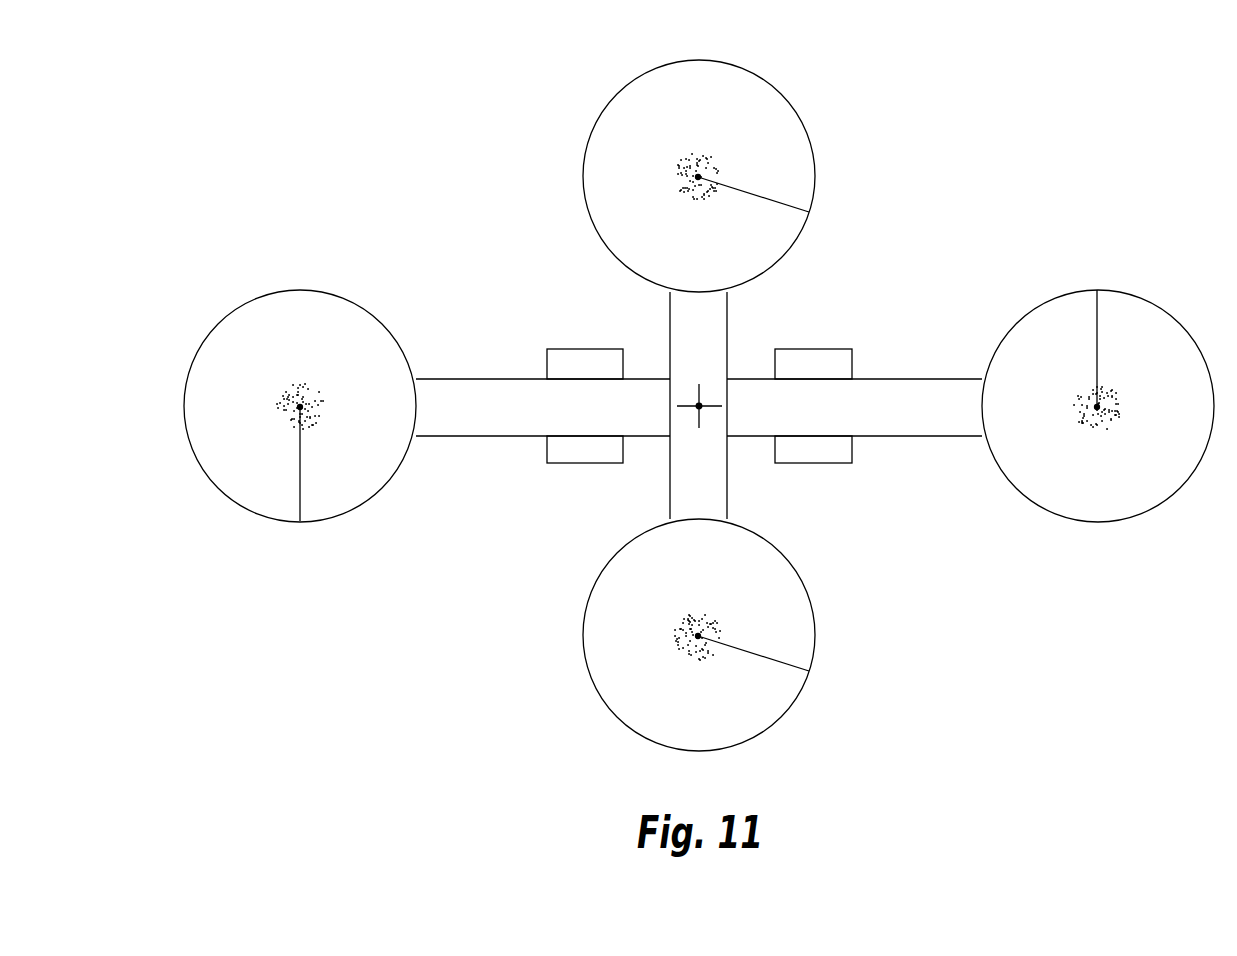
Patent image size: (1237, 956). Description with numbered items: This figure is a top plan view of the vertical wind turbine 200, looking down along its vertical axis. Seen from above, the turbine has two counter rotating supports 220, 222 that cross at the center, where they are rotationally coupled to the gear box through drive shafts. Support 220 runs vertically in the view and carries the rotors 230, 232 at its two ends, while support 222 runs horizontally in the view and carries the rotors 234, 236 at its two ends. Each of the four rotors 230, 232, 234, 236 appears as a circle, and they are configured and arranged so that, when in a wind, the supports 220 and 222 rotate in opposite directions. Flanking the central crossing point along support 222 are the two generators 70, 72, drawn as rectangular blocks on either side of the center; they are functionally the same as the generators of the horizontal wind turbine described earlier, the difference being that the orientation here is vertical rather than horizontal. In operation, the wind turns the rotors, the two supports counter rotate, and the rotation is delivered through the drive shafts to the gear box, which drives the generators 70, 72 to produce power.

The vertical wind turbine 200 is at (1133, 147).
The rotor 232 is at (783, 163).
The rotor 230 is at (773, 618).
The rotor 236 is at (365, 367).
The rotor 234 is at (1058, 320).
The counter rotating support 222 is at (468, 410).
The counter rotating support 220 is at (670, 488).
The generator 72 is at (546, 358).
The generator 70 is at (827, 464).